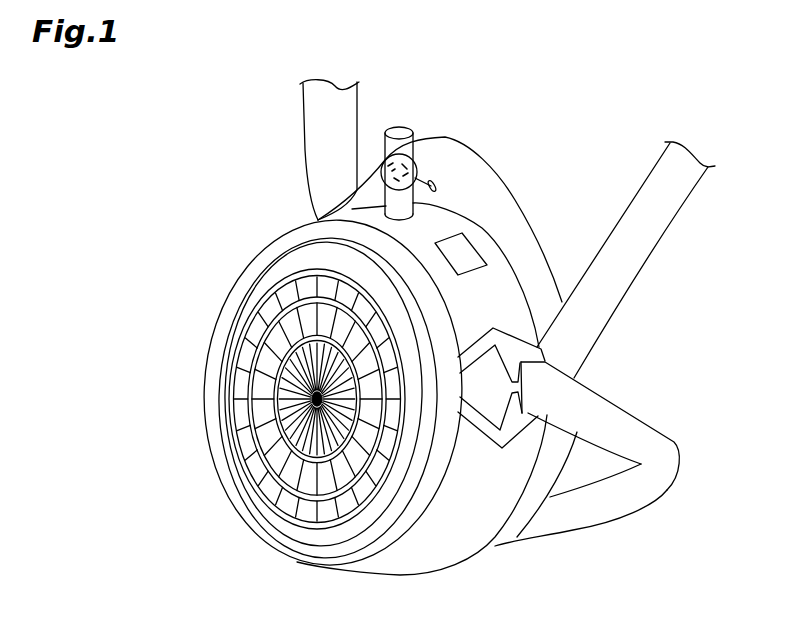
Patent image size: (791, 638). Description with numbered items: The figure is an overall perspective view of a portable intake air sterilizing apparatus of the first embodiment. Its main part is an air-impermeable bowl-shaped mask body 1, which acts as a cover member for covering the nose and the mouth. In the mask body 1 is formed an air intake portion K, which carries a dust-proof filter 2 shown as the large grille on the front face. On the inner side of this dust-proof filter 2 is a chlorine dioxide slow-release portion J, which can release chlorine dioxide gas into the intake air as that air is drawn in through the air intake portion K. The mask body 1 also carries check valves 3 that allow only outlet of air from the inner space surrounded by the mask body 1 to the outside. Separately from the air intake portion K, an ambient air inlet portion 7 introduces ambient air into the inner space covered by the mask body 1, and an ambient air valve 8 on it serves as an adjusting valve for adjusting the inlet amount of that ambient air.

The mask body 1 is at (458, 520).
The dust-proof filter 2 is at (258, 323).
The check valve 3 is at (462, 257).
The ambient air inlet portion 7 is at (428, 150).
The ambient air valve 8 is at (433, 186).
The air intake portion K is at (192, 391).
The chlorine dioxide slow-release portion J is at (237, 448).